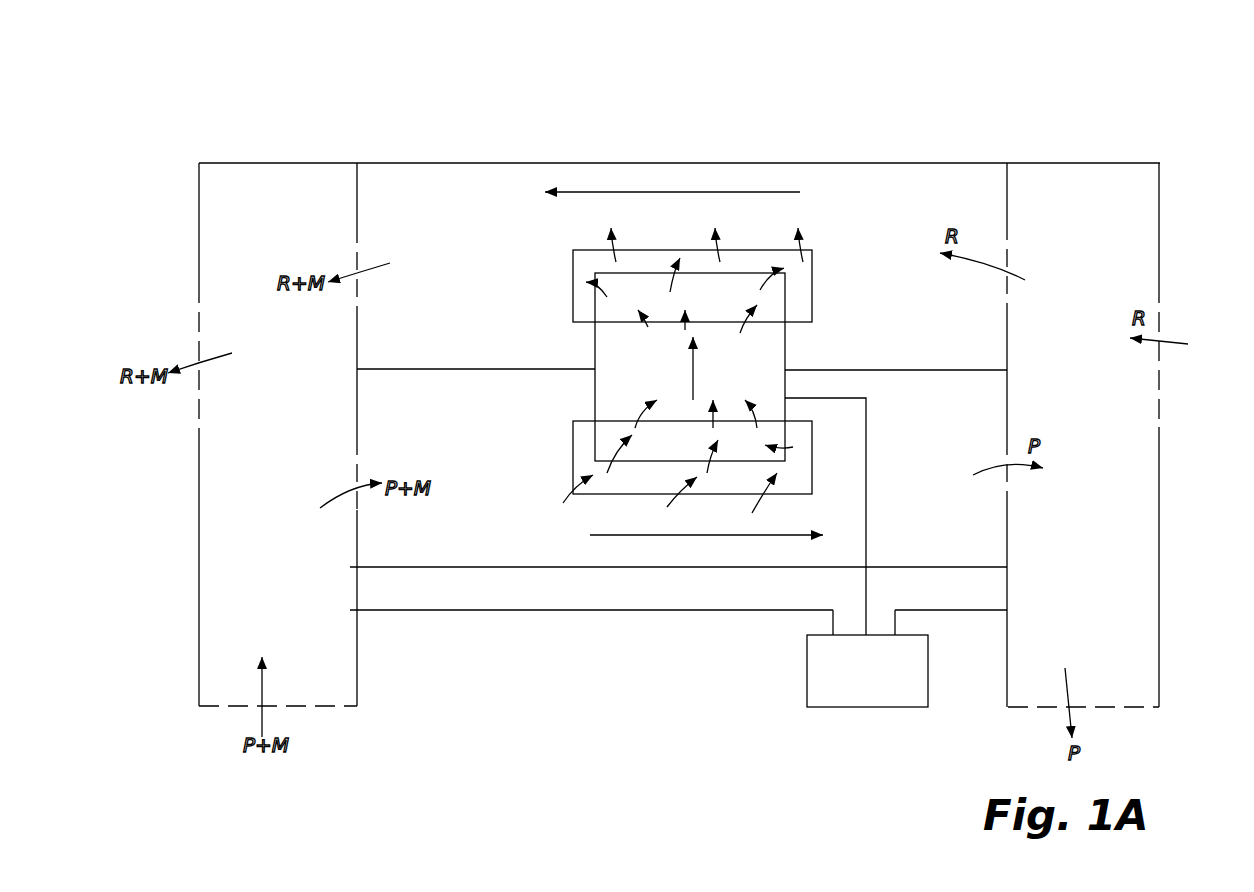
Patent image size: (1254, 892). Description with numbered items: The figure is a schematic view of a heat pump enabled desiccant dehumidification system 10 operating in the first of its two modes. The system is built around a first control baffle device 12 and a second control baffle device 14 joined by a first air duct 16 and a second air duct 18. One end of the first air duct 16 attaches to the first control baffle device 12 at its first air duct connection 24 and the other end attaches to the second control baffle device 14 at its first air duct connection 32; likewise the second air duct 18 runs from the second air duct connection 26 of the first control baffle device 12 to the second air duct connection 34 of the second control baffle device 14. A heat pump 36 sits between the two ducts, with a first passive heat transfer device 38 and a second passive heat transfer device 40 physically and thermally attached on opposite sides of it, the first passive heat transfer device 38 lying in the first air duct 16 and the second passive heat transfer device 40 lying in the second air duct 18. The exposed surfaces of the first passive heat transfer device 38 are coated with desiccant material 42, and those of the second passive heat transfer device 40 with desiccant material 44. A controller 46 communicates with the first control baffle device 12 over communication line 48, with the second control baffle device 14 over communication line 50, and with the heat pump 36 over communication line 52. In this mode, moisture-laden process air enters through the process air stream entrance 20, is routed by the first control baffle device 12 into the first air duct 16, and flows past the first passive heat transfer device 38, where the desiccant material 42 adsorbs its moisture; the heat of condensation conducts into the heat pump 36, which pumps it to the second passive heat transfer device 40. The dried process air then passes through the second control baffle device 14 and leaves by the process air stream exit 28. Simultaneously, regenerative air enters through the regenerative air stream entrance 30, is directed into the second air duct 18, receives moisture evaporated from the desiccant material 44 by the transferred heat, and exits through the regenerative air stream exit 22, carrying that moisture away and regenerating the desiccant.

The dehumidification system 10 is at (950, 150).
The first control baffle device 12 is at (245, 160).
The second control baffle device 14 is at (1165, 232).
The first air duct 16 is at (475, 535).
The second air duct 18 is at (435, 188).
The process air stream entrance 20 is at (237, 707).
The regenerative air stream exit 22 is at (198, 325).
The first air duct connection 24 is at (356, 440).
The second air duct connection 26 is at (356, 240).
The process air stream exit 28 is at (1085, 708).
The regenerative air stream entrance 30 is at (1158, 383).
The first air duct connection 32 is at (1010, 498).
The second air duct connection 34 is at (1007, 235).
The heat pump 36 is at (780, 358).
The first passive heat transfer device 38 is at (613, 435).
The second passive heat transfer device 40 is at (603, 313).
The desiccant material 42 is at (585, 463).
The desiccant material 44 is at (588, 260).
The controller 46 is at (805, 680).
The communication line 48 is at (705, 612).
The communication line 50 is at (963, 612).
The communication line 52 is at (870, 590).